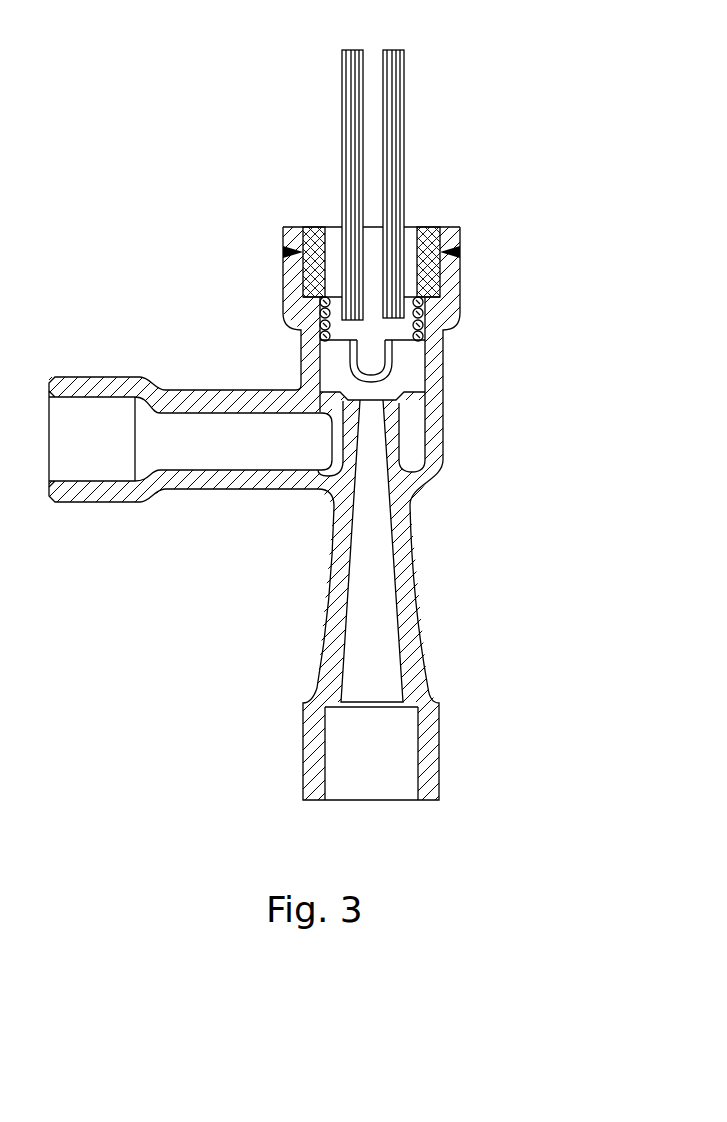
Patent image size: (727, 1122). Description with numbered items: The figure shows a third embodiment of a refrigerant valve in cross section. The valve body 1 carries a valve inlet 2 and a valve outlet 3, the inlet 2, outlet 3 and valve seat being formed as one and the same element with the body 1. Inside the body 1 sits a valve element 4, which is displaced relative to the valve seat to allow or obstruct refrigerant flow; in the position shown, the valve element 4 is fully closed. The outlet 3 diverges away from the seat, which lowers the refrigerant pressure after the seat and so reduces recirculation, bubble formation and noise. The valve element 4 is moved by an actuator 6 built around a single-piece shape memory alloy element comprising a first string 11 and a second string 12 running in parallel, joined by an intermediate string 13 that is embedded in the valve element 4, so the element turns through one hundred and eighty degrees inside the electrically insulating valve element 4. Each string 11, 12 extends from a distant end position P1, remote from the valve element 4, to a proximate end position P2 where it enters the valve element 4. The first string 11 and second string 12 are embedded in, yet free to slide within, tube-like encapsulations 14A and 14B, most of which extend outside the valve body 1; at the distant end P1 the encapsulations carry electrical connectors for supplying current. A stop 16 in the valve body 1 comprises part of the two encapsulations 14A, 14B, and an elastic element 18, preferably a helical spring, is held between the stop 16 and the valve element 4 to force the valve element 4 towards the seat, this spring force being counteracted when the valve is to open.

The valve body 1 is at (290, 351).
The valve inlet 2 is at (107, 412).
The valve outlet 3 is at (403, 762).
The valve element 4 is at (403, 382).
The actuator 6 is at (370, 166).
The first string 11 is at (351, 160).
The second string 12 is at (396, 160).
The intermediate string 13 is at (393, 332).
The encapsulation 14A is at (343, 115).
The encapsulation 14B is at (404, 123).
The stop 16 is at (413, 252).
The elastic element 18 is at (302, 298).
The distant end position P1 is at (424, 61).
The proximate end position P2 is at (460, 417).